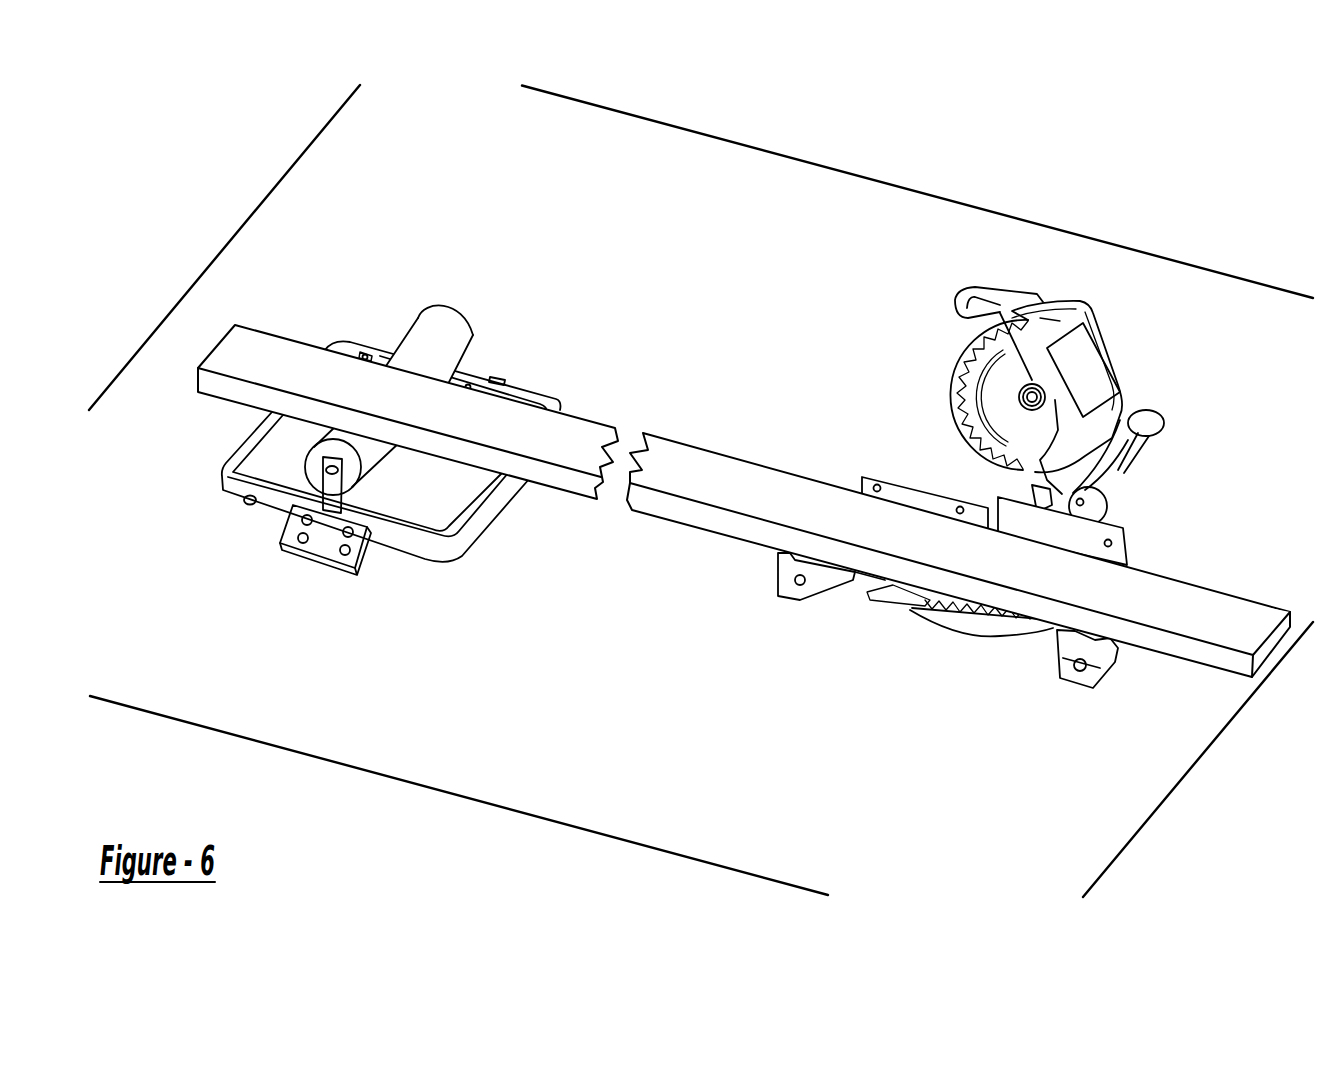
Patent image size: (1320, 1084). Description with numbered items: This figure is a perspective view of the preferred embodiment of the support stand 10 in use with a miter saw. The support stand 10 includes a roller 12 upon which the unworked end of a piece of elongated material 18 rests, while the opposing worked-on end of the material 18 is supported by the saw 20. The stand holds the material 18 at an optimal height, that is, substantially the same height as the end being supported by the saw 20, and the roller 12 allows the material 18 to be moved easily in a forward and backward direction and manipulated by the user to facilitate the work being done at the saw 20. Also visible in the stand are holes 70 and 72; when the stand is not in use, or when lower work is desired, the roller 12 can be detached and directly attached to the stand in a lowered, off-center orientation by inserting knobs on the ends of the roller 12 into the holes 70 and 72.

The support stand 10 is at (362, 305).
The roller 12 is at (470, 335).
The material 18 is at (733, 499).
The saw 20 is at (950, 385).
The hole 70 is at (247, 505).
The hole 72 is at (372, 355).